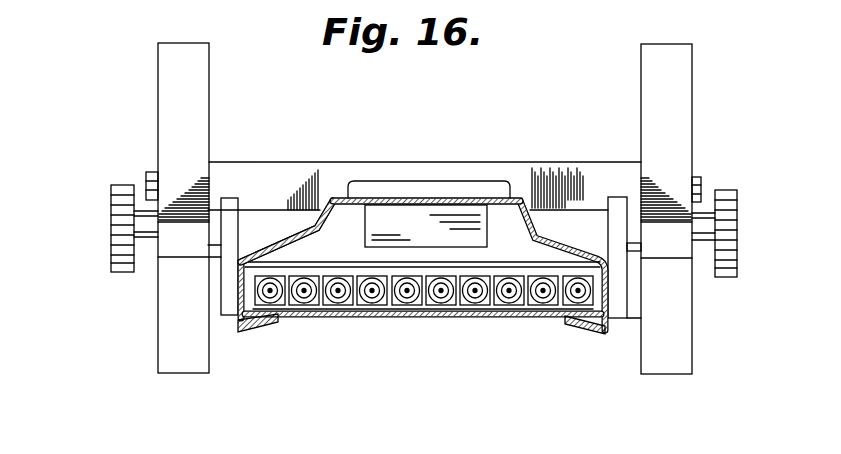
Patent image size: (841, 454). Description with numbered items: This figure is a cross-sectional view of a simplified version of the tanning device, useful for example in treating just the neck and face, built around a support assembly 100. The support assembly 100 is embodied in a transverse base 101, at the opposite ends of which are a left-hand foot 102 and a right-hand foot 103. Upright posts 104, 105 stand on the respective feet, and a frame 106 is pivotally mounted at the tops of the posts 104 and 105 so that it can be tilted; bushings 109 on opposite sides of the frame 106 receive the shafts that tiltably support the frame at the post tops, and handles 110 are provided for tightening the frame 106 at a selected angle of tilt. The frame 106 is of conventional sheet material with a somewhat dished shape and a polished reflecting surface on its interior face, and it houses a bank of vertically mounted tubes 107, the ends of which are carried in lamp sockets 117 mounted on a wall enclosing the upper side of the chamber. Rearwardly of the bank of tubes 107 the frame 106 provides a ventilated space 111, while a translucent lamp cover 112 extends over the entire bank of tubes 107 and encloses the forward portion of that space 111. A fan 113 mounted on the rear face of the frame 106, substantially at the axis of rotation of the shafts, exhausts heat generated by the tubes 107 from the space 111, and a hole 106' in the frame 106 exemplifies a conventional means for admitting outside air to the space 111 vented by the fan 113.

The support assembly 100 is at (147, 95).
The transverse base 101 is at (512, 175).
The left-hand foot 102 is at (173, 354).
The right-hand foot 103 is at (678, 355).
The upright post 104 is at (178, 247).
The upright post 105 is at (660, 248).
The frame 106 is at (417, 226).
The hole 106' is at (287, 177).
The tubes 107 is at (337, 296).
The bushing 109 is at (232, 307).
The handles 110 is at (117, 184).
The ventilated space 111 is at (342, 198).
The translucent lamp cover 112 is at (488, 318).
The fan 113 is at (413, 220).
The lamp sockets 117 is at (437, 298).